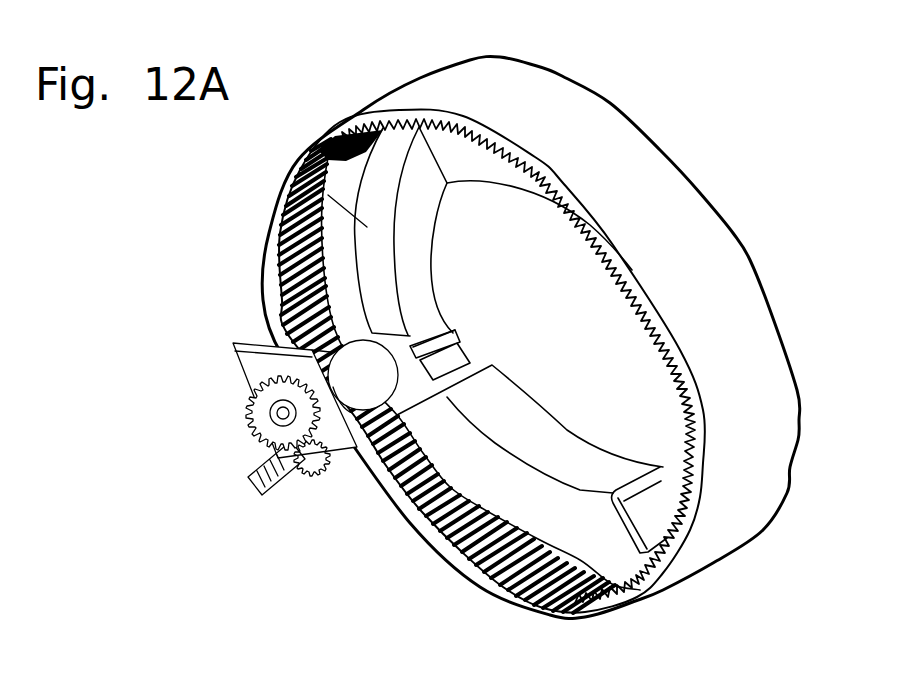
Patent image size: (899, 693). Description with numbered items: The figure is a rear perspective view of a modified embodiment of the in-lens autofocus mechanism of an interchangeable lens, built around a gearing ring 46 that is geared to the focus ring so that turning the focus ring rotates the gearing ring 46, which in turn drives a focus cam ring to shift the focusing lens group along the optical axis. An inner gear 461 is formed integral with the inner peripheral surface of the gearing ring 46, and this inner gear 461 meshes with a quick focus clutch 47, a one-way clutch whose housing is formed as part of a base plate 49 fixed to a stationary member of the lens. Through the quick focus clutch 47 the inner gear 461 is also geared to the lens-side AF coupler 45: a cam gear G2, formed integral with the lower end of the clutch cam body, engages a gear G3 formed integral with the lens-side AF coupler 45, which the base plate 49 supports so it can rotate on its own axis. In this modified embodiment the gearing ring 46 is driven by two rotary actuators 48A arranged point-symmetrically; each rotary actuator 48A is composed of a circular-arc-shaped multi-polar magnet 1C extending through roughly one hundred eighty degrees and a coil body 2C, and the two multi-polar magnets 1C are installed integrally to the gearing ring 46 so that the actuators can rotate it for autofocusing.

The gearing ring 46 is at (763, 510).
The inner gear 461 is at (568, 600).
The multi-polar magnet 1C is at (303, 183).
The coil body 2C is at (470, 163).
The rotary actuator 48A is at (450, 265).
The base plate 49 is at (248, 344).
The cam gear G2 is at (252, 416).
The gear G3 is at (308, 477).
The lens-side AF coupler 45 is at (258, 497).
The quick focus clutch 47 is at (370, 402).